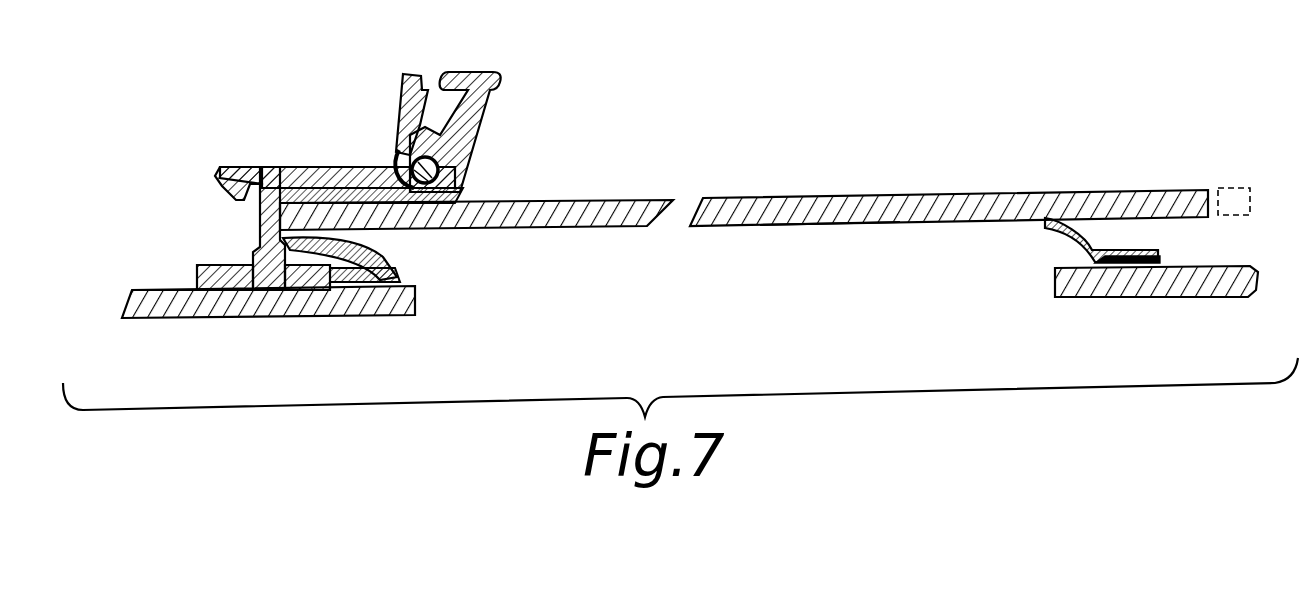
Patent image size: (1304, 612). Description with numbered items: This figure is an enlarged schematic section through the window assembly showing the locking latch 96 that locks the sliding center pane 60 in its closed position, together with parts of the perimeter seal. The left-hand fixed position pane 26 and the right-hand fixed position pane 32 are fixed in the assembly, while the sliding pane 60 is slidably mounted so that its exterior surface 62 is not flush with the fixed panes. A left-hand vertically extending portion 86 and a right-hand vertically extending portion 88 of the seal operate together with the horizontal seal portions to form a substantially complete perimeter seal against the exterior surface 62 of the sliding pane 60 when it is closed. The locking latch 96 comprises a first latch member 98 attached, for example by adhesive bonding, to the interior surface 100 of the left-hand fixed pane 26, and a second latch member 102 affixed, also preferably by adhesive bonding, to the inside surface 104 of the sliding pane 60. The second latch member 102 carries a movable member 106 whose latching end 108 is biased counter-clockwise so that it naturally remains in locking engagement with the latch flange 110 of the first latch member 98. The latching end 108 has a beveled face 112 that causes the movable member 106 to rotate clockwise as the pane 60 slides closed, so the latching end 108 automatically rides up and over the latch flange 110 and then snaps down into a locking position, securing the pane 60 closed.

The left-hand fixed position pane 26 is at (158, 318).
The right-hand fixed position pane 32 is at (1122, 282).
The sliding pane 60 is at (917, 198).
The exterior surface of sliding pane 62 is at (815, 222).
The left-hand vertically extending portion of seal 86 is at (1158, 250).
The right-hand vertically extending portion of seal 88 is at (400, 268).
The locking latch 96 is at (352, 159).
The first latch member 98 is at (207, 262).
The interior surface of left-hand fixed pane 100 is at (172, 289).
The second latch member 102 is at (480, 113).
The inside surface of slider pane 104 is at (583, 203).
The movable member 106 is at (403, 92).
The latching end 108 is at (228, 166).
The latch flange 110 is at (273, 186).
The beveled face 112 is at (228, 196).